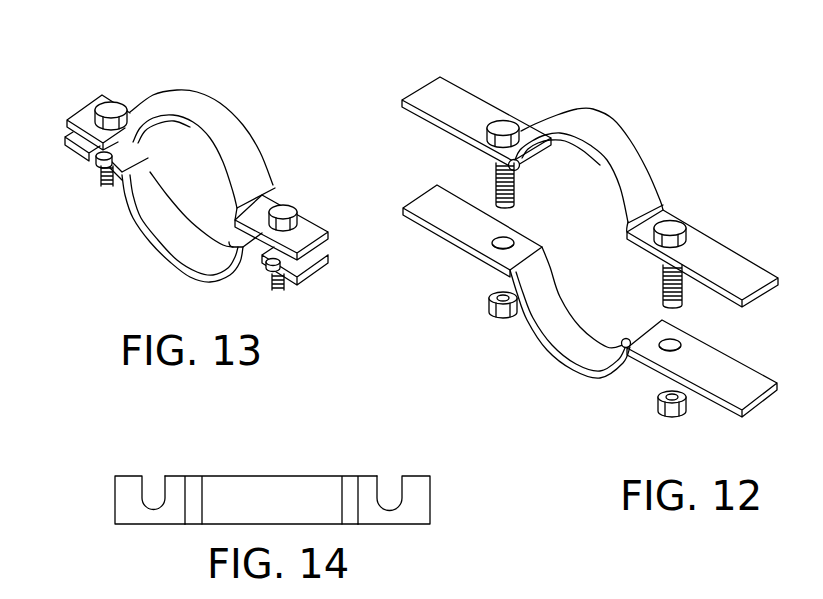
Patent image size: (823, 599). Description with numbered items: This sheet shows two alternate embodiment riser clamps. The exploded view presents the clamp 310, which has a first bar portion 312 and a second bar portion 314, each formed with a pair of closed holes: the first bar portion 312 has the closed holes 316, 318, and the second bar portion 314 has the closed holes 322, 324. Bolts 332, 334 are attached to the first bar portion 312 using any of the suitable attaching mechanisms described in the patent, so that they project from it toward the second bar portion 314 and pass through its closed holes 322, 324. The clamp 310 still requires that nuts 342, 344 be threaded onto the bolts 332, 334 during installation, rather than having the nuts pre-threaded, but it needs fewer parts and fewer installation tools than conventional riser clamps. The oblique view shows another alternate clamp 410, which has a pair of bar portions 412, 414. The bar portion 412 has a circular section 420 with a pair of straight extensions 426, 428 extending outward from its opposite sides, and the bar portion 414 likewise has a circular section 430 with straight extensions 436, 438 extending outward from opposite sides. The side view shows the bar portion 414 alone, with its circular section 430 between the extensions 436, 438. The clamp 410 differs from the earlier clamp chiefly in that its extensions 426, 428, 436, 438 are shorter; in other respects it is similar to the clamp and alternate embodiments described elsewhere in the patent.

In FIG. 12, the clamp 310 is at (445, 58).
In FIG. 12, the first bar portion 312 is at (415, 78).
In FIG. 12, the second bar portion 314 is at (392, 202).
In FIG. 12, the closed hole 316 is at (494, 110).
In FIG. 12, the closed hole 318 is at (698, 231).
In FIG. 12, the closed hole 322 is at (500, 248).
In FIG. 12, the closed hole 324 is at (667, 347).
In FIG. 12, the bolt 332 is at (507, 124).
In FIG. 12, the bolt 334 is at (675, 223).
In FIG. 12, the nut 342 is at (498, 313).
In FIG. 12, the nut 344 is at (680, 413).
In FIG. 13, the clamp 410 is at (78, 90).
In FIG. 13, the bar portion 412 is at (120, 80).
In FIG. 13, the bar portion 414 is at (87, 168).
In FIG. 14, the bar portion 414 is at (103, 473).
In FIG. 13, the circular section 420 is at (221, 125).
In FIG. 13, the straight extension 426 is at (108, 93).
In FIG. 13, the straight extension 428 is at (310, 230).
In FIG. 13, the circular section 430 is at (165, 232).
In FIG. 14, the circular section 430 is at (272, 482).
In FIG. 13, the straight extension 436 is at (70, 138).
In FIG. 14, the straight extension 436 is at (418, 515).
In FIG. 13, the straight extension 438 is at (297, 268).
In FIG. 14, the straight extension 438 is at (128, 520).